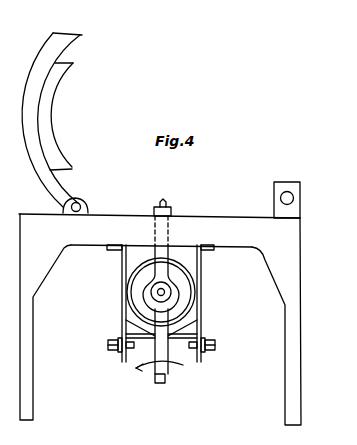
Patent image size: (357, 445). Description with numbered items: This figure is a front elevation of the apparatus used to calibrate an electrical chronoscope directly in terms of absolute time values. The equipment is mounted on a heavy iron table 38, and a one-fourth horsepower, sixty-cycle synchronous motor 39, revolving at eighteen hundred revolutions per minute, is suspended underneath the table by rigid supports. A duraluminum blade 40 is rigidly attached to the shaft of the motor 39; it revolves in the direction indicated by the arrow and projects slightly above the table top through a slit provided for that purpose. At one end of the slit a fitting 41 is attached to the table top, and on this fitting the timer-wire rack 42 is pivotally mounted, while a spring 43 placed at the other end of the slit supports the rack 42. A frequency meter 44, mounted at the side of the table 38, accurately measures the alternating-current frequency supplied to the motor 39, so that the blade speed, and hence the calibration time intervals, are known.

The heavy iron table 38 is at (300, 378).
The synchronous motor 39 is at (187, 292).
The blade 40 is at (166, 381).
The fitting 41 is at (85, 208).
The timer-wire rack 42 is at (65, 40).
The spring 43 is at (243, 217).
The frequency meter 44 is at (303, 207).